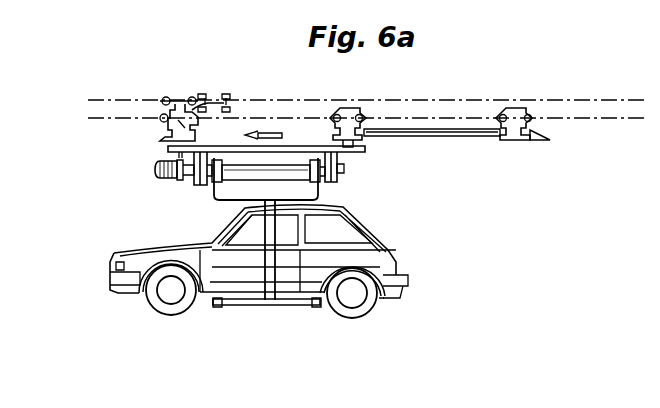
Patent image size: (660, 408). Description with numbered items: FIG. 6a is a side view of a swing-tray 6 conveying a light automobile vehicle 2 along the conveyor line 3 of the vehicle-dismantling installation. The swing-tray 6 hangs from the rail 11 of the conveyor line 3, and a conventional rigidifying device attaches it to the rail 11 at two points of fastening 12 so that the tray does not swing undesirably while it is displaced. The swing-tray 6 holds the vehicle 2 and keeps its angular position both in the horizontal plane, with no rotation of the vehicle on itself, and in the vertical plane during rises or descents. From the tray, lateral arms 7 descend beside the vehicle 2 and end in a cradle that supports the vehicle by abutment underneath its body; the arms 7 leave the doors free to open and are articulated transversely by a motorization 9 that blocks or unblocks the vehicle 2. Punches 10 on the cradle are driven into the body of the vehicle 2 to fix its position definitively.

The light automobile vehicle 2 is at (382, 258).
The conveyor line 3 is at (566, 101).
The swing-tray 6 is at (200, 198).
The lateral arm 7 is at (268, 240).
The motorization 9 is at (155, 171).
The punch 10 is at (315, 307).
The rail 11 is at (286, 118).
The point of fastening 12 is at (200, 105).